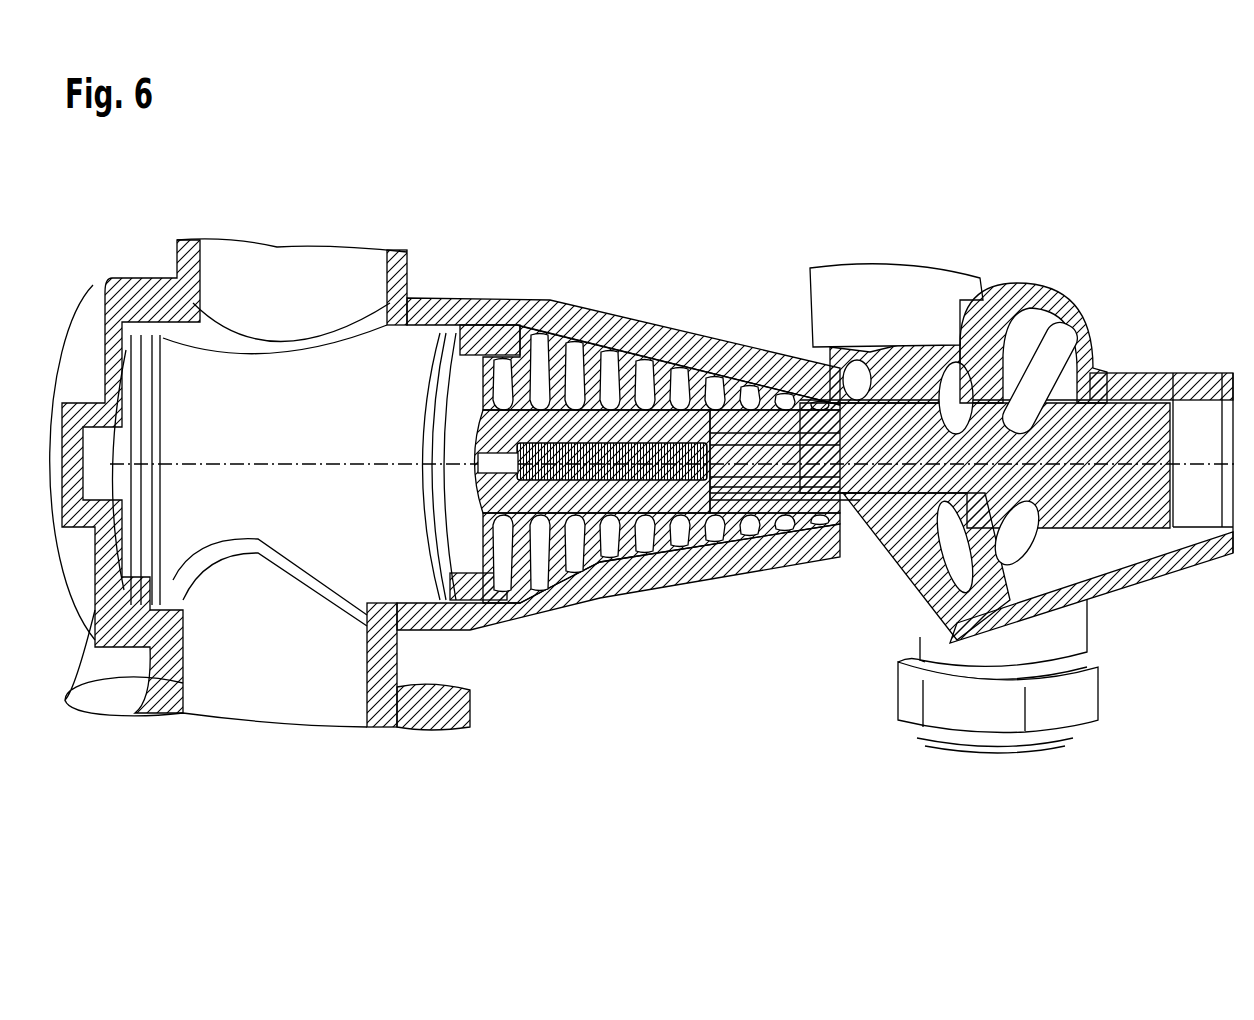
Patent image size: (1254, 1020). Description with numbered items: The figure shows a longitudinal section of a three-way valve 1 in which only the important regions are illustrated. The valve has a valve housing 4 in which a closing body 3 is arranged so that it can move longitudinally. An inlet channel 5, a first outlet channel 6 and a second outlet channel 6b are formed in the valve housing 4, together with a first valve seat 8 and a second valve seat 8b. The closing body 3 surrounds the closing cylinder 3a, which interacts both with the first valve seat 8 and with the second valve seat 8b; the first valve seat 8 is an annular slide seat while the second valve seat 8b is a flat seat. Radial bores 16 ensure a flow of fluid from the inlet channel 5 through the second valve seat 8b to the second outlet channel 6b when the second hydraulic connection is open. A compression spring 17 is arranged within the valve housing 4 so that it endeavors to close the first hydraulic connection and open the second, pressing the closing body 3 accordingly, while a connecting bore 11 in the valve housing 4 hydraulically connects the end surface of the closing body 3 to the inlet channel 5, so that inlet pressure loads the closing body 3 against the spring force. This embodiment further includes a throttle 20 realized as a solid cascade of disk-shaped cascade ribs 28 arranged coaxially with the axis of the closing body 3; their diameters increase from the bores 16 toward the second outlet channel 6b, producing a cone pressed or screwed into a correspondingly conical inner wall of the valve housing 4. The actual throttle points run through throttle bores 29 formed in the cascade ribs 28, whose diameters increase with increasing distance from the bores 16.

The three-way valve 1 is at (877, 178).
The closing body 3 is at (857, 523).
The closing cylinder 3a is at (1057, 353).
The valve housing 4 is at (437, 293).
The inlet channel 5 is at (930, 587).
The first outlet channel 6 is at (1027, 343).
The second outlet channel 6b is at (312, 505).
The first valve seat 8 is at (988, 327).
The second valve seat 8b is at (923, 550).
The connecting bore 11 is at (1117, 557).
The radial bores 16 is at (787, 407).
The compression spring 17 is at (607, 447).
The throttle 20 is at (563, 278).
The cascade ribs 28 is at (663, 548).
The throttle bores 29 is at (713, 400).